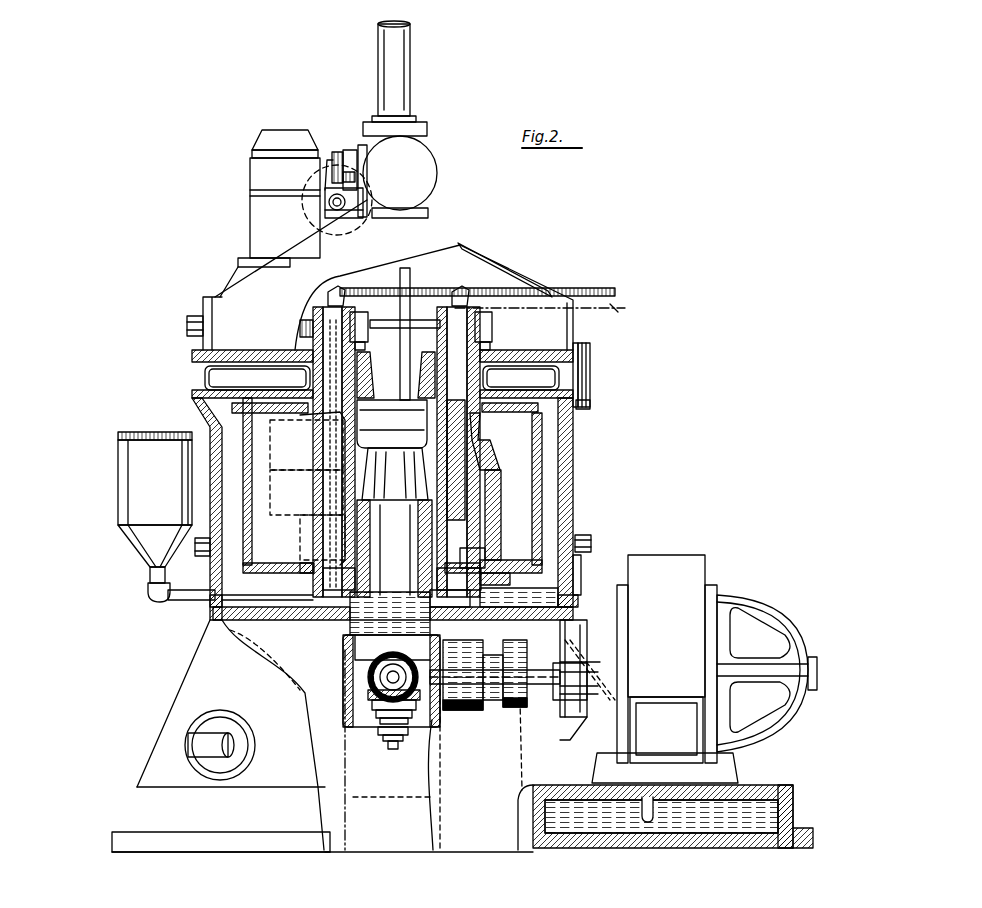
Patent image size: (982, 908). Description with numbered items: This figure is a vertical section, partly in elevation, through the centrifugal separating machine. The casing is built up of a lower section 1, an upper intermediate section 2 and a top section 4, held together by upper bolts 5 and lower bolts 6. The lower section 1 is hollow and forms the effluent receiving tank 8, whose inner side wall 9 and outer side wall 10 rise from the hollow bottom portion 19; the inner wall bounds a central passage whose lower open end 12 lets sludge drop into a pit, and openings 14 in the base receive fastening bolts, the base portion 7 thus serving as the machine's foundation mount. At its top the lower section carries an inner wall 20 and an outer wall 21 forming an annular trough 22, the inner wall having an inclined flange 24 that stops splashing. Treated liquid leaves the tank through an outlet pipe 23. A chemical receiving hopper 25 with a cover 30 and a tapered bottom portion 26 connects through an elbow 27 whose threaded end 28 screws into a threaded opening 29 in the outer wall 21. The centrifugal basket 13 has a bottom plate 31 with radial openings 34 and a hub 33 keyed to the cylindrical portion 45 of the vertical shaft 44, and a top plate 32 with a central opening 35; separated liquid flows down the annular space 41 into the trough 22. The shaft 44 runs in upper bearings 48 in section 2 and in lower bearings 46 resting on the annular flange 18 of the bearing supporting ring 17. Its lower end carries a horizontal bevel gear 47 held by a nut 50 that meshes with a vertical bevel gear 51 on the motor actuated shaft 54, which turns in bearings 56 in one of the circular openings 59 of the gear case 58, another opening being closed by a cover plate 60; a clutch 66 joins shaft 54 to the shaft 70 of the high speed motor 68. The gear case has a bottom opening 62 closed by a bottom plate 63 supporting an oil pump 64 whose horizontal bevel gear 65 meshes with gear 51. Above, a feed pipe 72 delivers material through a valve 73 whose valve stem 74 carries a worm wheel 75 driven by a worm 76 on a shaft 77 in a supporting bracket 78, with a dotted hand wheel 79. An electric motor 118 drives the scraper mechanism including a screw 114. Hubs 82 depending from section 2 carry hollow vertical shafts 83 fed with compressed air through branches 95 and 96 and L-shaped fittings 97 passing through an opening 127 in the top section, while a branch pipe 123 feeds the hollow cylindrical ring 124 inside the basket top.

The vertical feed pipe 72 is at (406, 80).
The standard valve 73 is at (437, 173).
The electric motor 118 is at (270, 213).
The worm wheel 75 is at (336, 152).
The valve stem 74 is at (350, 160).
The hand wheel 79 is at (330, 150).
The worm 76 is at (355, 176).
The shaft 77 is at (365, 196).
The supporting bracket 78 is at (356, 224).
The branch 95 is at (502, 288).
The top section 4 is at (500, 246).
The opening 127 is at (538, 290).
The L-shaped fitting 97 is at (336, 290).
The branch 96 is at (430, 292).
The branch pipe 123 is at (596, 311).
The screw 114 is at (300, 328).
The top plate 32 is at (262, 390).
The central opening 35 is at (270, 403).
The vertical shaft 83 is at (458, 382).
The upper intermediate section 2 is at (592, 375).
The upper bolt 5 is at (590, 406).
The annular space 41 is at (558, 455).
The lower bolt 6 is at (582, 536).
The outer wall 21 is at (580, 560).
The annular trough 22 is at (575, 598).
The centrifugal basket 13 is at (532, 470).
The hollow cylindrical ring 124 is at (310, 432).
The vertical hub 82 is at (486, 446).
The bottom plate 31 is at (478, 556).
The inclined flange 24 is at (515, 574).
The hub 33 is at (358, 528).
The vertical shaft 44 is at (362, 470).
The upper bearings 48 is at (396, 400).
The cylindrical portion 45 is at (394, 522).
The radial openings 34 is at (390, 576).
The lower bearings 46 is at (350, 601).
The annular flange 18 is at (390, 613).
The bearing supporting ring 17 is at (450, 597).
The inner wall 20 is at (506, 596).
The horizontal bevel gear 65 is at (355, 727).
The horizontal bevel gear 47 is at (368, 665).
The nut 50 is at (370, 695).
The cover plate 60 is at (372, 703).
The circular openings 59 is at (376, 713).
The gear case 58 is at (380, 720).
The bottom plate 63 is at (385, 735).
The opening 62 is at (400, 741).
The oil pump 64 is at (395, 750).
The vertical bevel gear 51 is at (440, 720).
The horizontal motor actuated shaft 54 is at (436, 672).
The bearings 56 is at (452, 710).
The clutch 66 is at (515, 707).
The motor shaft 70 is at (570, 665).
The lower section 1 is at (572, 620).
The frame 7 is at (195, 676).
The outlet pipe 23 is at (188, 746).
The inner side wall 9 is at (540, 756).
The lower open end 12 is at (456, 852).
The outer side wall 10 is at (615, 680).
The chemical receiving hopper 25 is at (155, 482).
The cover 30 is at (164, 432).
The tapered bottom portion 26 is at (140, 548).
The elbow 27 is at (158, 604).
The threaded end 28 is at (205, 602).
The threaded opening 29 is at (205, 560).
The high speed motor 68 is at (704, 669).
The effluent receiving tank 8 is at (722, 846).
The bottom portion 19 is at (652, 848).
The openings 14 is at (793, 800).